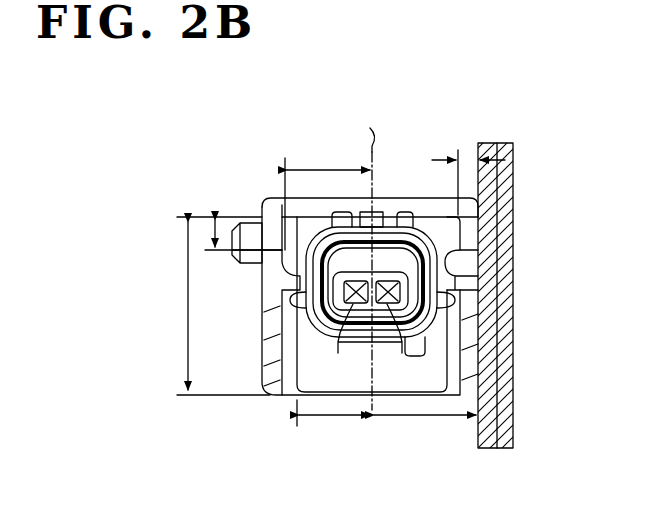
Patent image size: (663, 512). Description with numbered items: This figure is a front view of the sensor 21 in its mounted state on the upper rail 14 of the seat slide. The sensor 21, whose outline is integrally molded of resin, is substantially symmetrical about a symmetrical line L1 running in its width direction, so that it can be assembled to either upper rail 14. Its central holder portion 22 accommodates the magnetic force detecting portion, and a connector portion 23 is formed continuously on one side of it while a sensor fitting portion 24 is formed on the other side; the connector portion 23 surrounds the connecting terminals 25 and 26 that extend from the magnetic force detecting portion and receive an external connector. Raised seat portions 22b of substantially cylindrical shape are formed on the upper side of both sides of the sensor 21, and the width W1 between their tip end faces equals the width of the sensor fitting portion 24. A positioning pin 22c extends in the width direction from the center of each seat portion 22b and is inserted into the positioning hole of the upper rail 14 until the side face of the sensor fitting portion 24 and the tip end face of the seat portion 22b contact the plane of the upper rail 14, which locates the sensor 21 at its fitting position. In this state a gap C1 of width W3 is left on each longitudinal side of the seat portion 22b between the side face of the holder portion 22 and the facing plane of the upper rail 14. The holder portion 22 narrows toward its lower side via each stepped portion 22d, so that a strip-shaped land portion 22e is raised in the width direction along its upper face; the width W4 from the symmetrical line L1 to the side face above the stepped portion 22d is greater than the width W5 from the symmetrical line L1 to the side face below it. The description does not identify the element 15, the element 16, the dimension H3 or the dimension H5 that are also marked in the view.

The upper rail 14 is at (560, 445).
The mounting hole 15 is at (478, 432).
The panel surface 16 is at (506, 380).
The sensor 21 is at (270, 125).
The holder portion 22 is at (447, 345).
The seat portion 22b is at (488, 176).
The positioning pin 22c is at (481, 210).
The stepped portion 22d is at (264, 280).
The land portion 22e is at (275, 197).
The connector portion 23 is at (300, 326).
The sensor fitting portion 24 is at (390, 198).
The connecting terminal 25 is at (353, 304).
The connecting terminal 26 is at (387, 304).
The gap C1 is at (466, 240).
The height H3 is at (205, 232).
The height H5 is at (210, 306).
The symmetrical line L1 is at (370, 254).
The width between tip end faces of the seat portions W1 is at (420, 418).
The width of the gap W3 is at (432, 158).
The width on the upper side of the holder portion W4 is at (327, 195).
The width on the lower side of the holder portion W5 is at (333, 422).